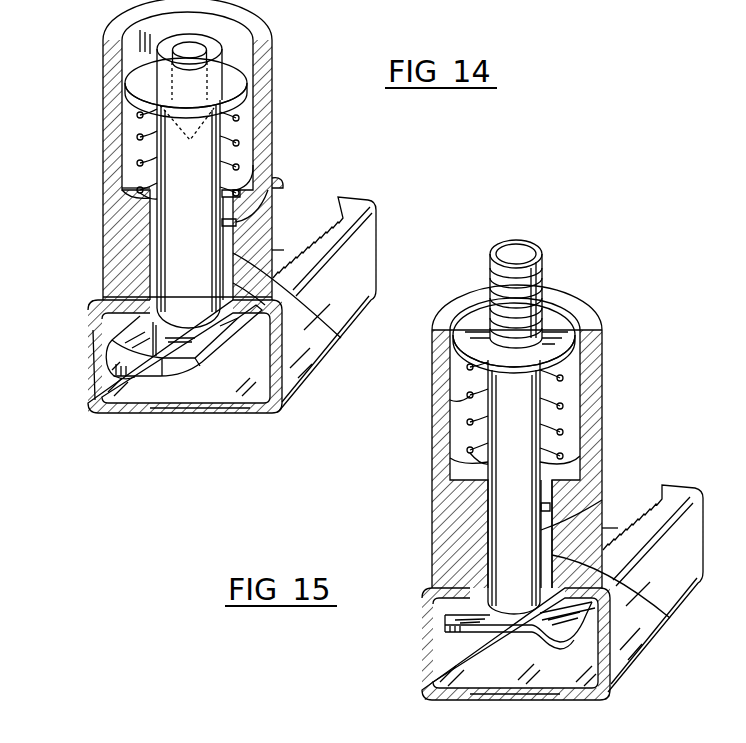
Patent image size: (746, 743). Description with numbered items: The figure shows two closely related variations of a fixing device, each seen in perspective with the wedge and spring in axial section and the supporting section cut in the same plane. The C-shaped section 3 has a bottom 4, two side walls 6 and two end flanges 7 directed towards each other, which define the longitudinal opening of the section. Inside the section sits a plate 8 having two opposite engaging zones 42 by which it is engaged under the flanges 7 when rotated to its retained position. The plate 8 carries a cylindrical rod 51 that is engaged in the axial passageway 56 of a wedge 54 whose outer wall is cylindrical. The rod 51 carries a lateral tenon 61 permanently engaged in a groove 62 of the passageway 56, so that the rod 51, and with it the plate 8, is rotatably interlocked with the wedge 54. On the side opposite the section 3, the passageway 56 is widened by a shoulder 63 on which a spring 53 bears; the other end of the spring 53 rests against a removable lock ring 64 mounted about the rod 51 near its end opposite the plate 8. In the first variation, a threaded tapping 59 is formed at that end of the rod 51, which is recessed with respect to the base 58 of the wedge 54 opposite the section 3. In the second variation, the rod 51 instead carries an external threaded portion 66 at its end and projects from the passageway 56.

In FIG. 14, the C-shaped section 3 is at (86, 378).
In FIG. 15, the C-shaped section 3 is at (421, 658).
In FIG. 14, the bottom 4 is at (204, 406).
In FIG. 15, the bottom 4 is at (517, 698).
In FIG. 14, the side wall 6 is at (93, 353).
In FIG. 15, the end flange 7 is at (440, 592).
In FIG. 14, the plate 8 is at (164, 378).
In FIG. 14, the engaging zone 42 is at (127, 408).
In FIG. 14, the cylindrical rod 51 is at (172, 226).
In FIG. 15, the cylindrical rod 51 is at (505, 432).
In FIG. 14, the spring 53 is at (249, 126).
In FIG. 15, the spring 53 is at (450, 431).
In FIG. 14, the wedge 54 is at (90, 88).
In FIG. 15, the wedge 54 is at (606, 372).
In FIG. 14, the axial passageway 56 is at (327, 328).
In FIG. 15, the axial passageway 56 is at (668, 616).
In FIG. 15, the base 58 is at (573, 305).
In FIG. 14, the threaded tapping 59 is at (107, 103).
In FIG. 14, the lateral tenon 61 is at (274, 190).
In FIG. 15, the lateral tenon 61 is at (600, 472).
In FIG. 14, the groove 62 is at (290, 352).
In FIG. 15, the groove 62 is at (547, 547).
In FIG. 14, the shoulder 63 is at (146, 173).
In FIG. 14, the removable lock ring 64 is at (233, 77).
In FIG. 15, the removable lock ring 64 is at (468, 328).
In FIG. 15, the external threaded portion 66 is at (532, 278).